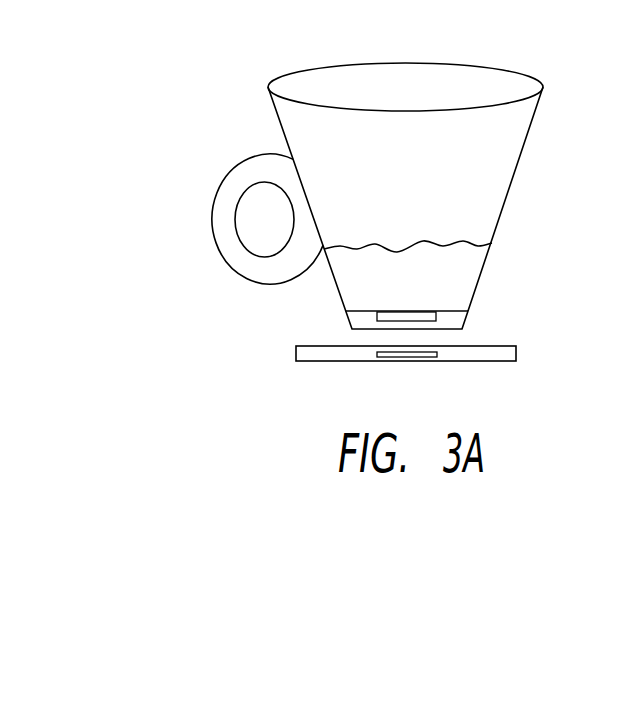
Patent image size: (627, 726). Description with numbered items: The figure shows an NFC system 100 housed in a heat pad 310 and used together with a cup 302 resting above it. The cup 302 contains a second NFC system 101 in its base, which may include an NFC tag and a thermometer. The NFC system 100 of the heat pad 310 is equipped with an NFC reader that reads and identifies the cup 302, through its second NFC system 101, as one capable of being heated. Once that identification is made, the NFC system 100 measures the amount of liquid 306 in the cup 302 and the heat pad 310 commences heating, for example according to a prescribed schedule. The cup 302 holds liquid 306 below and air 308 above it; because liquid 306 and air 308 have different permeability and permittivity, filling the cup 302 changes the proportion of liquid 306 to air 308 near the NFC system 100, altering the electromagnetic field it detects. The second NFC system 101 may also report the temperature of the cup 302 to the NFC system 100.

The NFC system 100 is at (437, 355).
The second NFC system 101 is at (436, 316).
The cup 302 is at (522, 152).
The liquid 306 is at (421, 287).
The air 308 is at (422, 178).
The heat pad 310 is at (516, 351).